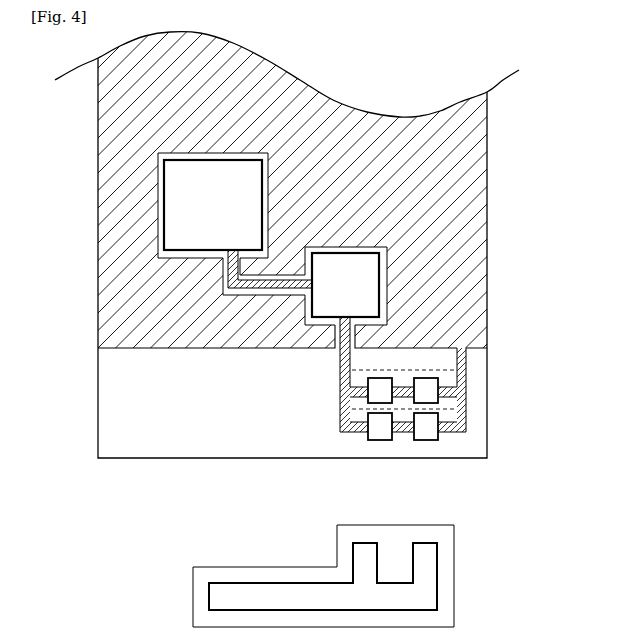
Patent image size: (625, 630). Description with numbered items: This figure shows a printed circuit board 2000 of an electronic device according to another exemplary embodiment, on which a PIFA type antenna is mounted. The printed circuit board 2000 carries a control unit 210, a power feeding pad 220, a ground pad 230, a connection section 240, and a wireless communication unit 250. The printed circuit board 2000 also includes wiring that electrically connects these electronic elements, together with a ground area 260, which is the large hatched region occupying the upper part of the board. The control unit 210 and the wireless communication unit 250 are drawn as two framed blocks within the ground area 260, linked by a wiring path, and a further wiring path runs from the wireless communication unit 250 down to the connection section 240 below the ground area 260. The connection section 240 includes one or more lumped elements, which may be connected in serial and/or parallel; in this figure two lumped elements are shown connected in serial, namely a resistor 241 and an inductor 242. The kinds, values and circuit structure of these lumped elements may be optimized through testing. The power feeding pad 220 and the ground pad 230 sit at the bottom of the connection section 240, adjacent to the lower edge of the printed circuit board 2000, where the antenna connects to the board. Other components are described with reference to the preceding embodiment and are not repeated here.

The printed circuit board 2000 is at (487, 122).
The ground area 260 is at (455, 192).
The control unit 210 is at (182, 212).
The wireless communication unit 250 is at (365, 293).
The connection section 240 is at (427, 370).
The resistor 241 is at (428, 388).
The inductor 242 is at (383, 378).
The power feeding pad 220 is at (380, 441).
The ground pad 230 is at (425, 441).